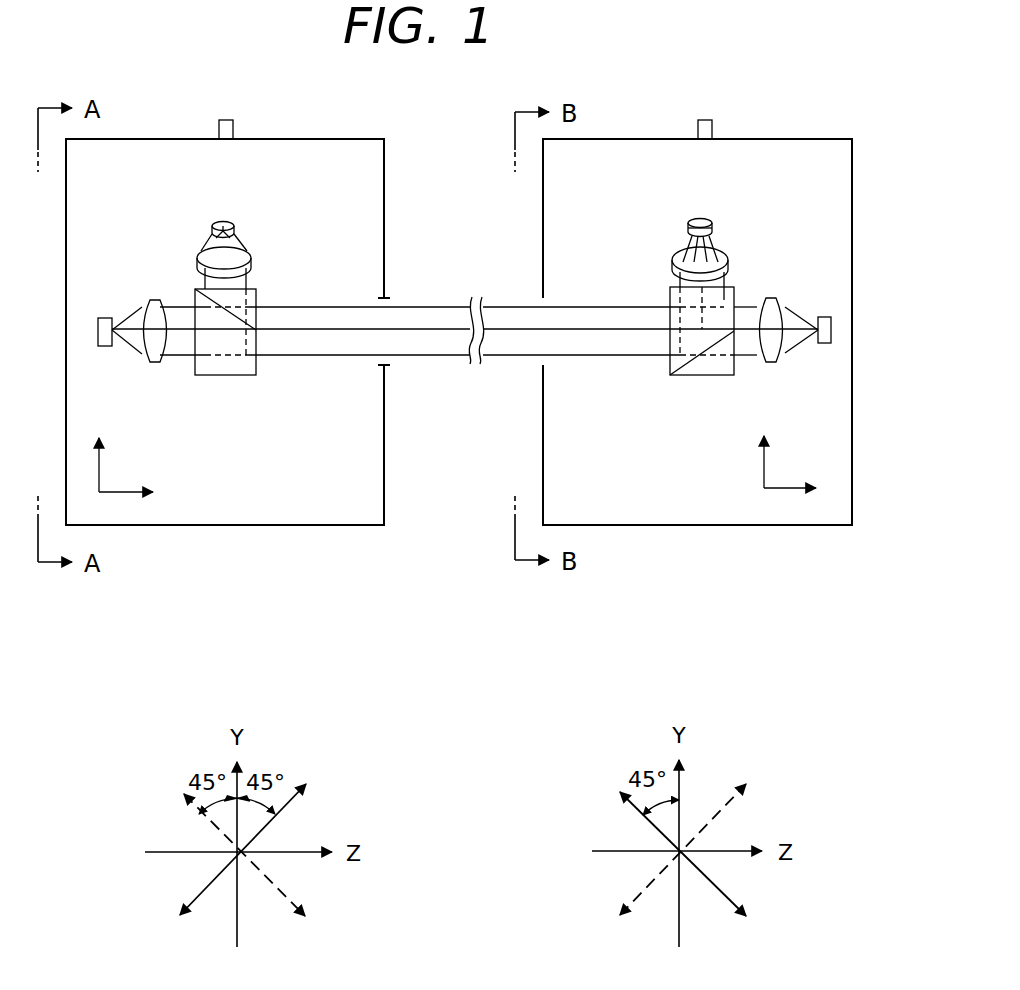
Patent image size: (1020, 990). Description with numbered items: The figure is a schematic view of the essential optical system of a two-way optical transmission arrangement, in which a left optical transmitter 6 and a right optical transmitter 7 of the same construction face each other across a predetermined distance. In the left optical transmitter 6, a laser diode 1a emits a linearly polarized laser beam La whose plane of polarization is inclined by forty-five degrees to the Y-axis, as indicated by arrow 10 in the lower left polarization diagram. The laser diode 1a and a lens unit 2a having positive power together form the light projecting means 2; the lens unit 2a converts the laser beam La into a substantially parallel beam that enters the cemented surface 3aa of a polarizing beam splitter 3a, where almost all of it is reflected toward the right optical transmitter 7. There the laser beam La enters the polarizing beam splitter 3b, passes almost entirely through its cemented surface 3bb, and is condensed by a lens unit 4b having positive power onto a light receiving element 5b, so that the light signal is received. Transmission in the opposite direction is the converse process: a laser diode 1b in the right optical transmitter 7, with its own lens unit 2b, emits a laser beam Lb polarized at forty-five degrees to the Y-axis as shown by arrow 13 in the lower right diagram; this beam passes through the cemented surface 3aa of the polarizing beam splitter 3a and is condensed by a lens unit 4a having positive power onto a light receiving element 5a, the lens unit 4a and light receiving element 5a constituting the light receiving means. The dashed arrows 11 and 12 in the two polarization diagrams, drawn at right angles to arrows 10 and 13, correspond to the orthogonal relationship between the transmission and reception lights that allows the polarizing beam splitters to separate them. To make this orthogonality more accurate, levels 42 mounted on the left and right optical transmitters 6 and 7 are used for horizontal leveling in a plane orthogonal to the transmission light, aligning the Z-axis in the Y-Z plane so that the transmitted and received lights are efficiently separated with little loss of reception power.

The laser diode 1a is at (226, 221).
The laser diode 1b is at (700, 218).
The light source unit 2 is at (252, 223).
The lens unit having positive power 2a is at (252, 262).
The collimator lens / laser module 2b is at (727, 249).
The polarizing beam splitter 3a is at (233, 376).
The cemented surface 3aa is at (260, 297).
The polarizing beam splitter 3b is at (720, 376).
The cemented surface 3bb is at (692, 373).
The lens unit having positive power 4a is at (152, 300).
The lens unit having positive power 4b is at (772, 297).
The light receiving element 5a is at (102, 318).
The light receiving element 5b is at (824, 317).
The left optical transmitter 6 is at (330, 526).
The right optical transmitter 7 is at (827, 526).
The arrow indicating plane of polarization 10 is at (312, 785).
The polarization direction of received beam 11 is at (275, 893).
The polarization direction of received beam 12 is at (723, 808).
The arrow indicating plane of polarization 13 is at (718, 893).
The level 42 is at (233, 126).
The laser beam La is at (200, 272).
The laser beam Lb is at (670, 288).